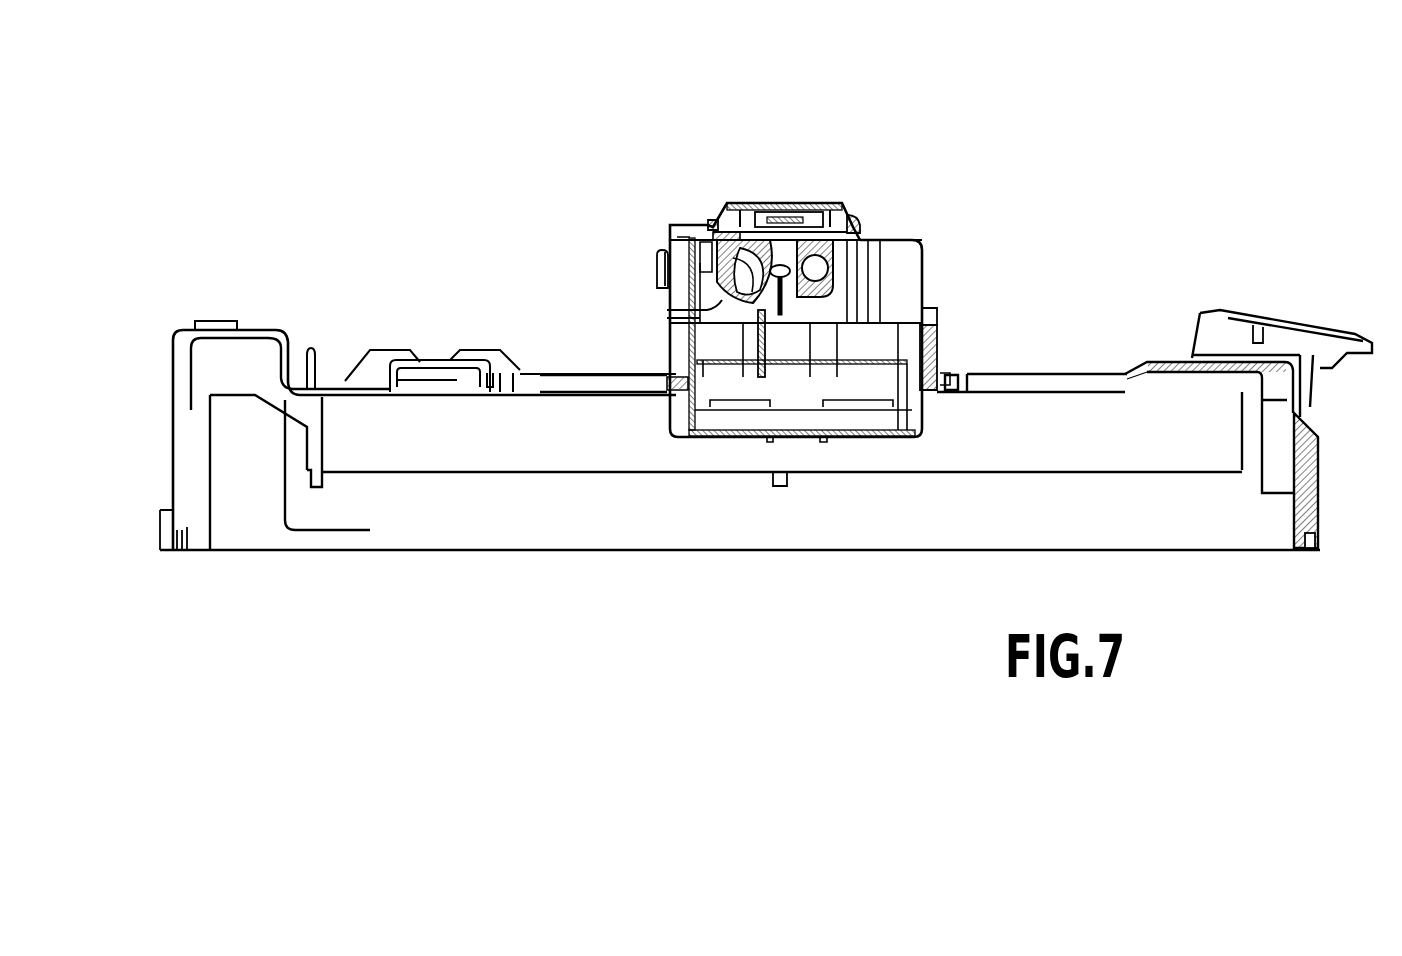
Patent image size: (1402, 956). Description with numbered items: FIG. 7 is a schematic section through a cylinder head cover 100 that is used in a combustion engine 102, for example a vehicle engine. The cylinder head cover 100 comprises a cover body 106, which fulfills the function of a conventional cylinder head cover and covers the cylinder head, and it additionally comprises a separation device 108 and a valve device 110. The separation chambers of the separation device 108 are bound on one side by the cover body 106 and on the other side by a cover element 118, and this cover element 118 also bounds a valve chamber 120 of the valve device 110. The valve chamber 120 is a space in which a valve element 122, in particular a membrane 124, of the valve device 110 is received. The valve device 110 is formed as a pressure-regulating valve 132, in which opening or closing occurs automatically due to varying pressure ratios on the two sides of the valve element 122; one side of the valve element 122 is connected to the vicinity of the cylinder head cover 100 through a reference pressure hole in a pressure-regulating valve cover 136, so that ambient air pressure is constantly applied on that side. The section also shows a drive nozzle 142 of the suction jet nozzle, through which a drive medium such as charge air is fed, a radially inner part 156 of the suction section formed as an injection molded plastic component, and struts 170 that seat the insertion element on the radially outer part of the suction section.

The cylinder head cover 100 is at (1150, 174).
The combustion engine 102 is at (1248, 211).
The cover body 106 is at (265, 303).
The separation device 108 is at (962, 341).
The valve device 110 is at (764, 182).
The cover element 118 is at (880, 237).
The valve chamber 120 is at (847, 255).
The valve element 122 is at (720, 213).
The membrane 124 is at (733, 220).
The pressure-regulating valve 132 is at (797, 185).
The pressure-regulating valve cover 136 is at (827, 217).
The drive nozzle 142 is at (763, 330).
The radially inner part 156 is at (703, 240).
The struts 170 is at (667, 310).